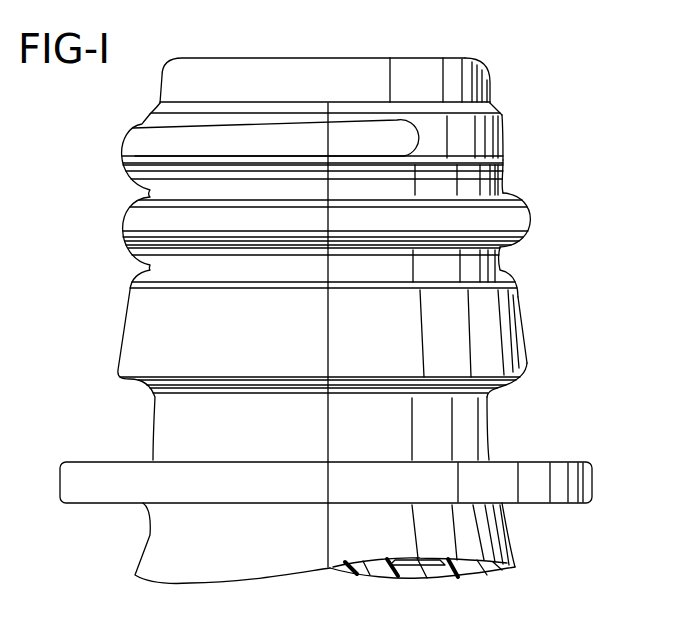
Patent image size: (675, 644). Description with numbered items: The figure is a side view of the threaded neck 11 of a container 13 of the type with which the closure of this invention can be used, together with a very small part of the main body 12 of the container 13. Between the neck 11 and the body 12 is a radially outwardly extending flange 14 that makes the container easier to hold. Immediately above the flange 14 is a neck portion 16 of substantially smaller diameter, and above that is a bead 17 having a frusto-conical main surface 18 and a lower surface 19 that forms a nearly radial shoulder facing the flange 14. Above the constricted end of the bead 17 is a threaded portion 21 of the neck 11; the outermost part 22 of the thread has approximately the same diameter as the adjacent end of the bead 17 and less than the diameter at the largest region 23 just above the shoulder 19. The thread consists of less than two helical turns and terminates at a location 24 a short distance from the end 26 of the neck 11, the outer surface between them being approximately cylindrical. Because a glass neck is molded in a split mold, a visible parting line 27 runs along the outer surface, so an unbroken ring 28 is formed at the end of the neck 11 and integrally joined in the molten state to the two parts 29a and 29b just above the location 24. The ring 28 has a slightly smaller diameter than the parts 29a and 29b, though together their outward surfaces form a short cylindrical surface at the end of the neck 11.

The neck 11 is at (510, 141).
The main body 12 is at (507, 537).
The container 13 is at (138, 540).
The flange 14 is at (594, 491).
The neck portion 16 is at (493, 432).
The bead 17 is at (532, 326).
The main surface 18 is at (518, 293).
The lower surface 19 is at (507, 386).
The threaded portion 21 is at (523, 197).
The outermost part of the thread 22 is at (531, 217).
The largest region 23 is at (523, 371).
The location 24 is at (418, 120).
The end of the neck 26 is at (238, 57).
The parting line 27 is at (327, 342).
The ring 28 is at (488, 76).
The part 29a is at (504, 113).
The part 29b is at (147, 120).